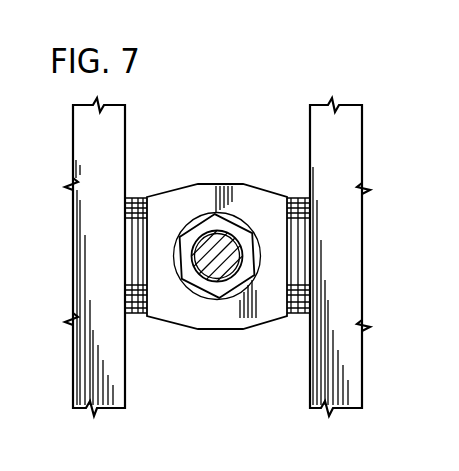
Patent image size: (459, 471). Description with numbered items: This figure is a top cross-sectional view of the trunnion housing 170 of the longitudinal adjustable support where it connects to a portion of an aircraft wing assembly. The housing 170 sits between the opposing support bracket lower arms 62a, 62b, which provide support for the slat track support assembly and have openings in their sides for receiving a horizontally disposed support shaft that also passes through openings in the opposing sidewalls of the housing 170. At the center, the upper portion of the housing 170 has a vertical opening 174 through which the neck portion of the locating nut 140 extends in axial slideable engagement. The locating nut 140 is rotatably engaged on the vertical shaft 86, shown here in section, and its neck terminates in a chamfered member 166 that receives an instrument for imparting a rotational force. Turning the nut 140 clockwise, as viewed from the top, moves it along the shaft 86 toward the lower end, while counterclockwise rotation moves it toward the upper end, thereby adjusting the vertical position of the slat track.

The support bracket lower arm 62a is at (120, 381).
The support bracket lower arm 62b is at (315, 375).
The trunnion housing 170 is at (193, 195).
The vertical opening 174 is at (193, 232).
The locating nut 140 is at (207, 290).
The chamfered member 166 is at (215, 212).
The vertical shaft 86 is at (207, 231).